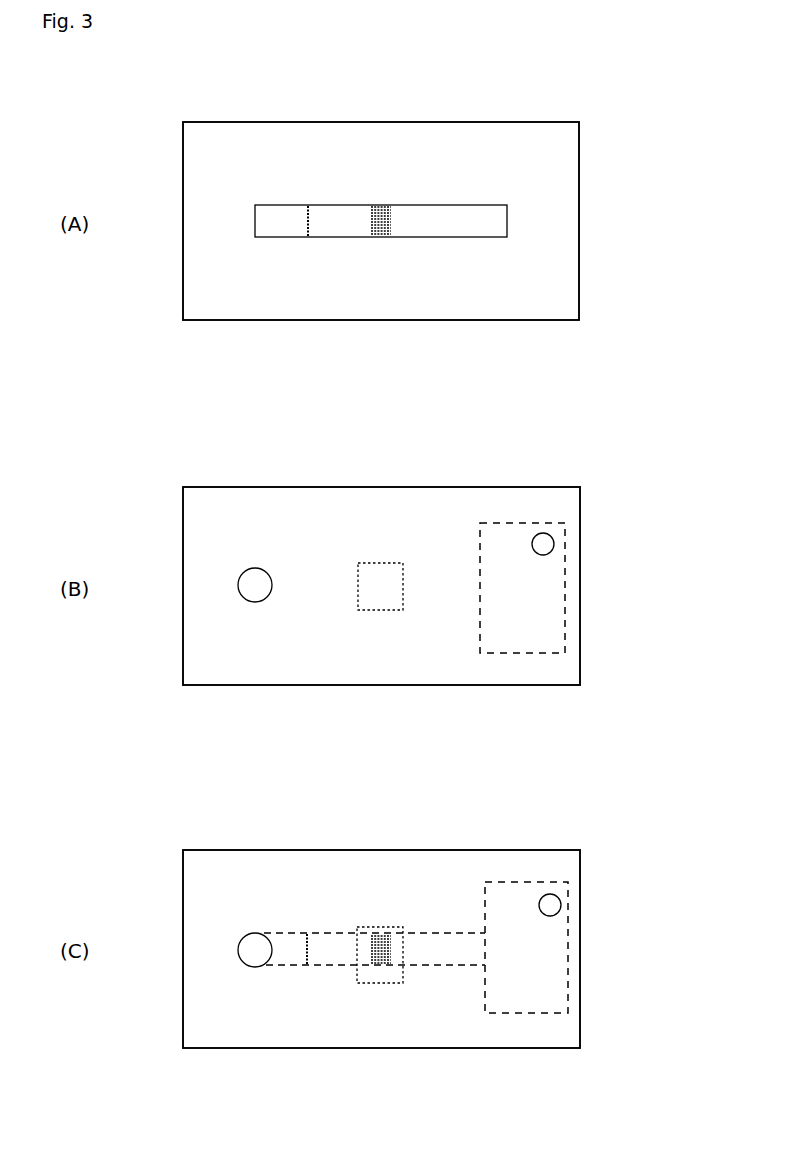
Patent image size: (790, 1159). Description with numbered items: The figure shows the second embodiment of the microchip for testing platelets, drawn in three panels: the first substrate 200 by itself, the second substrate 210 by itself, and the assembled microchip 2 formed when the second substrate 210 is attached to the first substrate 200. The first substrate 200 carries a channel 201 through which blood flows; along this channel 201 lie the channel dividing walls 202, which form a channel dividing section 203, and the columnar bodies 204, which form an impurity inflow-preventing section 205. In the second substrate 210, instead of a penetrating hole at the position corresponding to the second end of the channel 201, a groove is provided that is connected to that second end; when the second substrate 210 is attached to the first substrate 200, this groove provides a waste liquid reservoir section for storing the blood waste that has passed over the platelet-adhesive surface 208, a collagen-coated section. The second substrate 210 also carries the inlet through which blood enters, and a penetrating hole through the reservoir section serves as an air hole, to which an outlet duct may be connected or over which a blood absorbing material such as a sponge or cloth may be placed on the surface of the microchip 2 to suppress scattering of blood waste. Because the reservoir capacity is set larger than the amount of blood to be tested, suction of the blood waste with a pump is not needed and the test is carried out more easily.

The microchip 2 is at (597, 948).
The first substrate 200 is at (597, 210).
The channel 201 is at (271, 205).
The channel dividing walls 202 is at (380, 205).
The channel dividing section 203 is at (377, 985).
The columnar bodies 204 is at (310, 206).
The impurity inflow-preventing section 205 is at (306, 968).
The platelet-adhesive surface 208 is at (380, 563).
The second substrate 210 is at (597, 588).